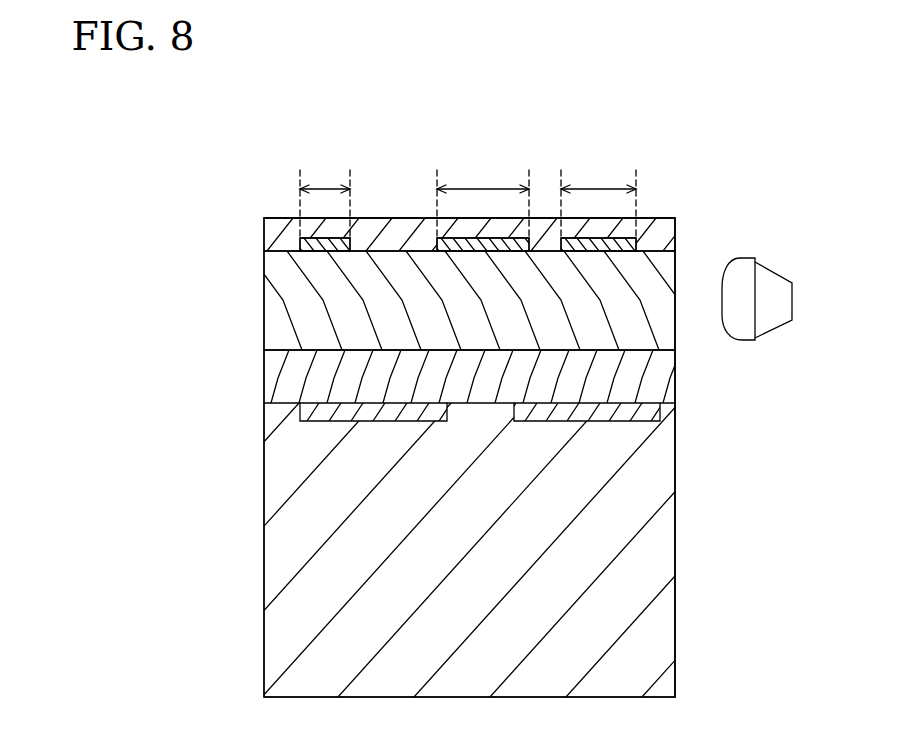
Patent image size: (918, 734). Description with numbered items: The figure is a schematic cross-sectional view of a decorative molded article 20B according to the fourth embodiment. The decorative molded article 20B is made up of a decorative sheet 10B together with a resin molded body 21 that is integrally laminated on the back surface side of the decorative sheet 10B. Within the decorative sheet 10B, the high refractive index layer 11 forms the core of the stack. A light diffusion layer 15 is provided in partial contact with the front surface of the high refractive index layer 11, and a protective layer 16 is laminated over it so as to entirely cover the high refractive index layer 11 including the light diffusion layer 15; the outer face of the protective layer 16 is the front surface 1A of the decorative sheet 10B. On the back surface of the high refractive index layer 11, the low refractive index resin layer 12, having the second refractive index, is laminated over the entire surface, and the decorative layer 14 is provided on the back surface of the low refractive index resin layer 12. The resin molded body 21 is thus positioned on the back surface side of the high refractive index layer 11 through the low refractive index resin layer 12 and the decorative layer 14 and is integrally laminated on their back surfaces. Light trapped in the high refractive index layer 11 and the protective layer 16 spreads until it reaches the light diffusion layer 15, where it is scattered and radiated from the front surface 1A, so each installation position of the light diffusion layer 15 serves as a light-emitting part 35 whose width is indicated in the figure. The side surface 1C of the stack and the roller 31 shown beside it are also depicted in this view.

The decorative sheet 10B is at (248, 267).
The decorative molded article 20B is at (443, 128).
The protective layer 16 is at (280, 227).
The light diffusion layer 15 is at (437, 240).
The high refractive index layer 11 is at (280, 301).
The low refractive index resin layer 12 is at (278, 372).
The decorative layer 14 is at (320, 421).
The resin molded body 21 is at (657, 553).
The front surface 1A is at (657, 216).
The side surface 1C is at (676, 314).
The roller 31 is at (768, 277).
The light-emitting part 35 is at (468, 198).